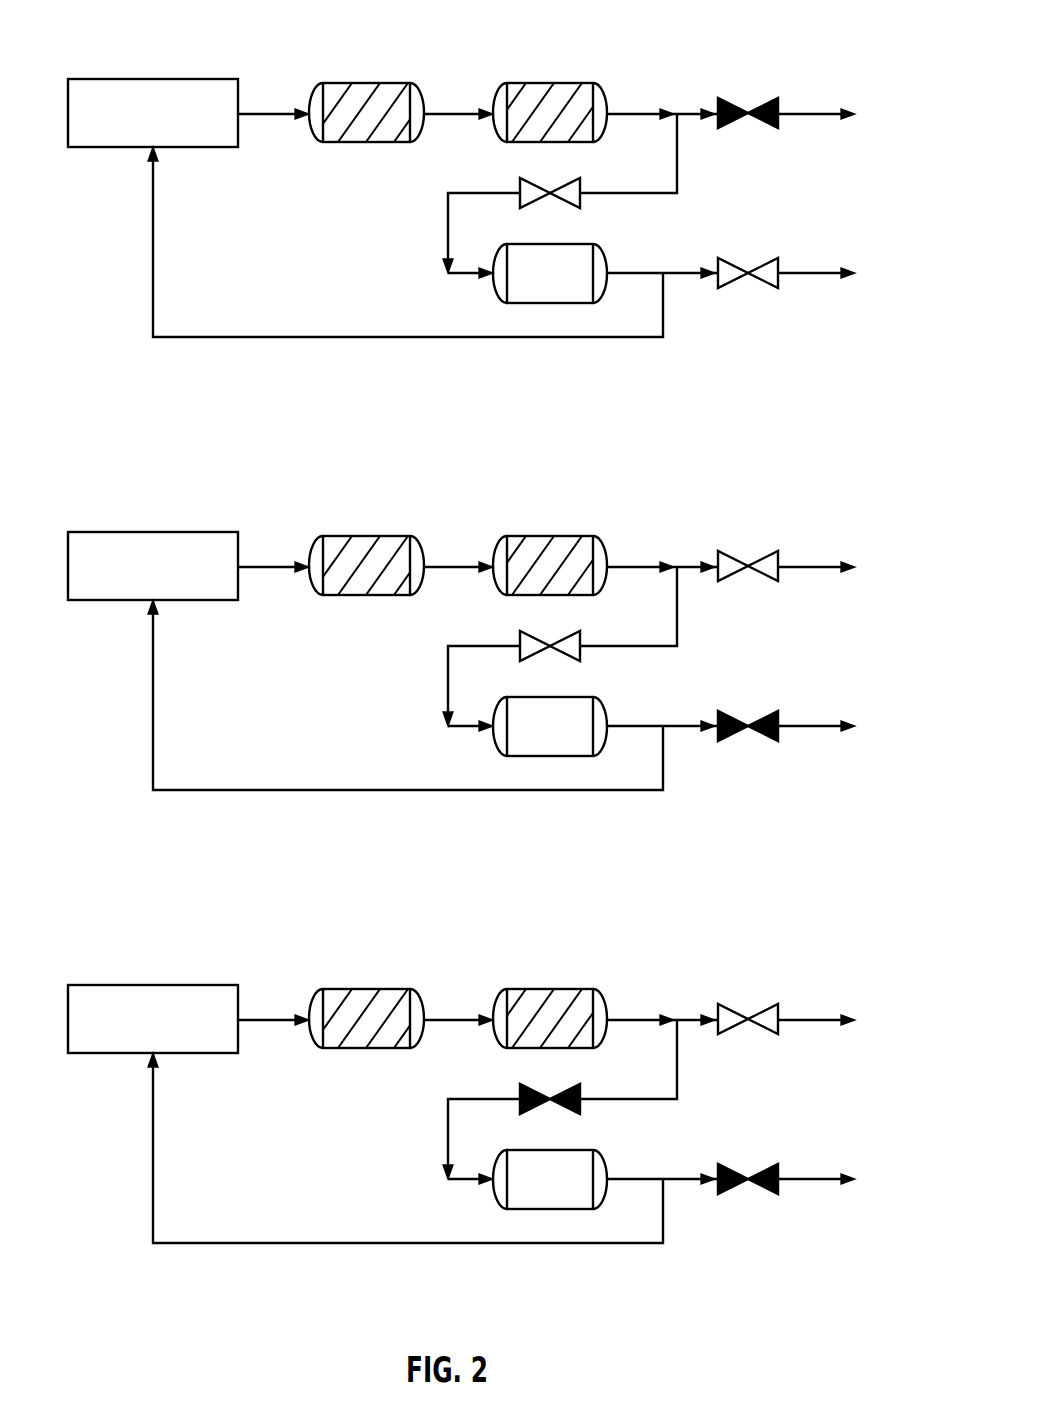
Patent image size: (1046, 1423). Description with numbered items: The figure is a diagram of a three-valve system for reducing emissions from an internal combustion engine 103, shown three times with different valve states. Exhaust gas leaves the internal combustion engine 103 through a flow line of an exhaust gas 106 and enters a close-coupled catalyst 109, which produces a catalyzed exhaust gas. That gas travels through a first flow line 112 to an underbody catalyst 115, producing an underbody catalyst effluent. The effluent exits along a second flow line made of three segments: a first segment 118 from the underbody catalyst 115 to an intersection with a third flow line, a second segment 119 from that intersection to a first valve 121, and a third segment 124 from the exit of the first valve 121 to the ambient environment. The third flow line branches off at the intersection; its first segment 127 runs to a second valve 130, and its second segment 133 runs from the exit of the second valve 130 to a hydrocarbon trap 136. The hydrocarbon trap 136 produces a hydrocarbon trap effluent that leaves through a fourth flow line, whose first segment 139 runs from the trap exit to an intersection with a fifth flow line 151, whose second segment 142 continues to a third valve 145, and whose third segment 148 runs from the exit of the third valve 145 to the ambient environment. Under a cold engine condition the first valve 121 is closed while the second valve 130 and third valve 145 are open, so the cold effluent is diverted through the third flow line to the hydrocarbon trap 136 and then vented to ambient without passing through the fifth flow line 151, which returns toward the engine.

The internal combustion engine 103 is at (133, 79).
The flow line of an exhaust gas 106 is at (268, 112).
The close-coupled catalyst 109 is at (344, 83).
The first flow line 112 is at (458, 112).
The underbody catalyst 115 is at (528, 83).
The first segment of the second flow line 118 is at (640, 112).
The second segment of the second flow line 119 is at (699, 112).
The first valve 121 is at (768, 97).
The third segment of the second flow line 124 is at (820, 112).
The third flow line (first segment) 127 is at (678, 170).
The second valve 130 is at (521, 184).
The second segment of the third flow line 133 is at (448, 229).
The hydrocarbon trap 136 is at (549, 303).
The first segment of the fourth flow line 139 is at (635, 274).
The second segment of the fourth flow line 142 is at (685, 273).
The third valve 145 is at (760, 288).
The third segment of the fourth flow line 148 is at (820, 273).
The fifth flow line 151 is at (153, 229).